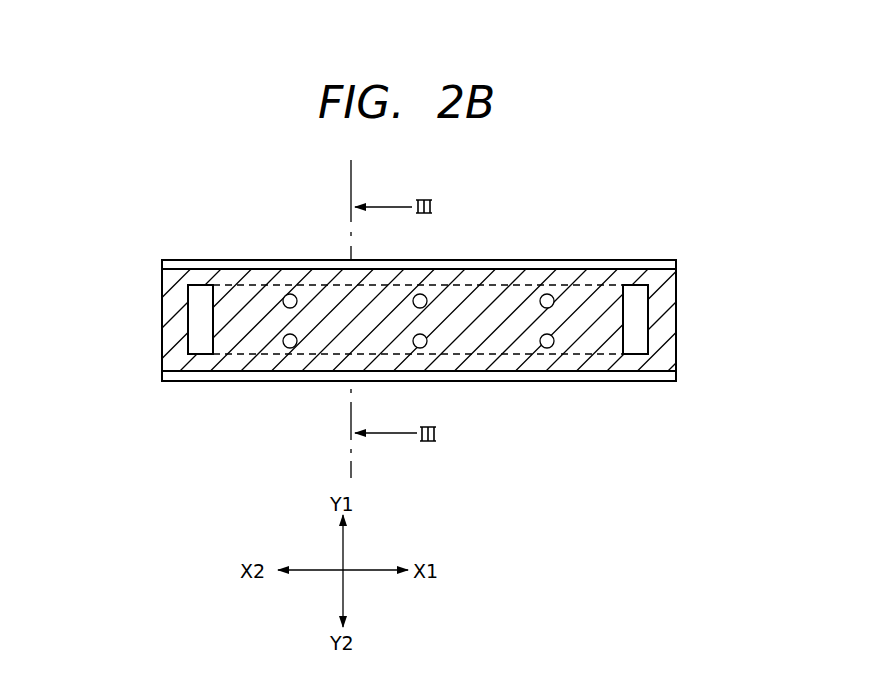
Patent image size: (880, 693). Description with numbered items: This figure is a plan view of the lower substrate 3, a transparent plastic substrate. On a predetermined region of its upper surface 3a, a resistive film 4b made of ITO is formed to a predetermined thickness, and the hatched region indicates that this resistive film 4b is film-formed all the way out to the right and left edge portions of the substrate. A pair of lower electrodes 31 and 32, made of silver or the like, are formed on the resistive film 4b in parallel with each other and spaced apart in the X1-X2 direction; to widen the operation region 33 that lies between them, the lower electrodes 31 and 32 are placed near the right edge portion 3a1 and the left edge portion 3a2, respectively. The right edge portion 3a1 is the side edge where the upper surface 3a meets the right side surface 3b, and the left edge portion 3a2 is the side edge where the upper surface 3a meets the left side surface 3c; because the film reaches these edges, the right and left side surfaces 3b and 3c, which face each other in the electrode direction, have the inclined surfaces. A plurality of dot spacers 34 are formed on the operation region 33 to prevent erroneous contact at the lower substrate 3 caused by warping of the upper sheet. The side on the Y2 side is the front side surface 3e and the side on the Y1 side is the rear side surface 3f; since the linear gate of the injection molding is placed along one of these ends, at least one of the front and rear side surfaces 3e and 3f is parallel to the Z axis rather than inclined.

The lower substrate 3 is at (506, 259).
The upper surface 3a is at (224, 258).
The right edge portion 3a1 is at (677, 356).
The left edge portion 3a2 is at (162, 353).
The right side surface 3b is at (677, 292).
The left side surface 3c is at (162, 271).
The front side surface 3e is at (650, 381).
The rear side surface 3f is at (618, 259).
The resistive film 4b is at (197, 266).
The lower electrode 31 is at (638, 318).
The lower electrode 32 is at (196, 305).
The operation region 33 is at (509, 349).
The dot spacers 34 is at (290, 294).